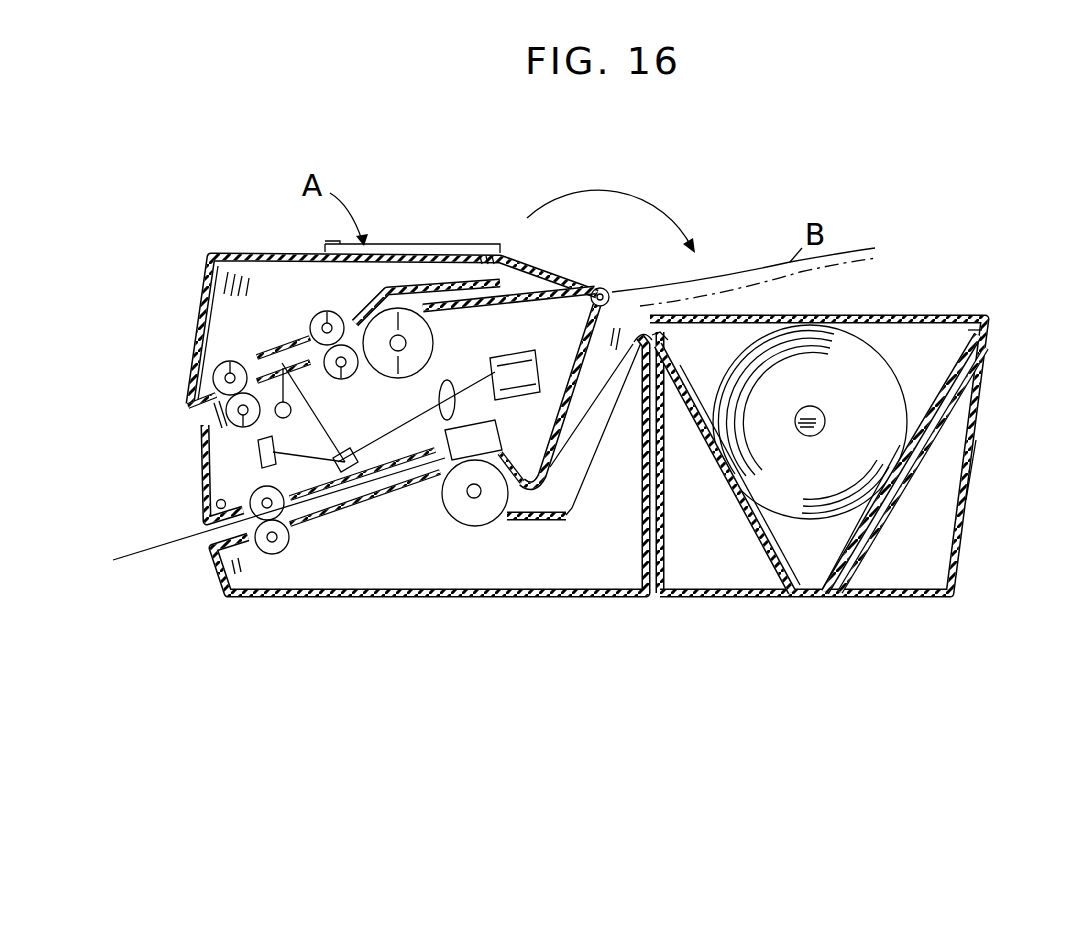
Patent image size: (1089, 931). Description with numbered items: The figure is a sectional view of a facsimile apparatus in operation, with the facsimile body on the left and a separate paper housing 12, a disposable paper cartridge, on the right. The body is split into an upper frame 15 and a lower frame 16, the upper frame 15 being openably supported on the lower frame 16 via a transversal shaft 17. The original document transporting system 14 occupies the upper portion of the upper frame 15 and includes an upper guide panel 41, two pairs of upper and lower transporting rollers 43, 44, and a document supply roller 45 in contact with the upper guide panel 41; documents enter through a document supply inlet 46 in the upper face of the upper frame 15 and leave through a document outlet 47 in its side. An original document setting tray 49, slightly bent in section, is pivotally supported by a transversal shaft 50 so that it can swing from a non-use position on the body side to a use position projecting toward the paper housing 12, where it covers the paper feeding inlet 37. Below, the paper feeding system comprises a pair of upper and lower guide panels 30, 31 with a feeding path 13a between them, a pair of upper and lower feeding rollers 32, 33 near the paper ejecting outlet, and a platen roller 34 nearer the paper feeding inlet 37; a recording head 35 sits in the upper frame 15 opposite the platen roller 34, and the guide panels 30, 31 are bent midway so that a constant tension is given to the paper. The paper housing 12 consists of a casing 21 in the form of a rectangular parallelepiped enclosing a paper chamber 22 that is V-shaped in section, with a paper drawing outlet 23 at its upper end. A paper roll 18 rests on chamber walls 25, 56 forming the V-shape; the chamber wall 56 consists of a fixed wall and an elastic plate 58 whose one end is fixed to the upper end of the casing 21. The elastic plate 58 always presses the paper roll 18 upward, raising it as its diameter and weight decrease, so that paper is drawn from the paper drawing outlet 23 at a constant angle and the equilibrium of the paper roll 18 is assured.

The paper housing 12 is at (958, 273).
The feeding path 13a is at (340, 512).
The original document transporting system 14 is at (264, 290).
The upper frame 15 is at (205, 283).
The lower frame 16 is at (348, 600).
The transversal shaft 17 is at (213, 508).
The paper roll 18 is at (865, 370).
The casing 21 is at (972, 497).
The paper chamber 22 is at (950, 338).
The paper drawing outlet 23 is at (693, 322).
The chamber wall 25 is at (758, 560).
The upper guide panel 30 is at (430, 500).
The lower guide panel 31 is at (412, 492).
The upper feeding roller 32 is at (258, 490).
The lower feeding roller 33 is at (272, 555).
The platen roller 34 is at (478, 522).
The recording head 35 is at (487, 430).
The paper feeding inlet 37 is at (620, 335).
The upper guide panel 41 is at (262, 364).
The upper transporting roller 43 is at (222, 366).
The lower transporting roller 44 is at (330, 322).
The document supply roller 45 is at (432, 340).
The document supply inlet 46 is at (515, 265).
The document outlet 47 is at (200, 410).
The original document setting tray 49 is at (408, 242).
The transversal shaft 50 is at (598, 287).
The chamber wall 56 is at (820, 600).
The elastic plate 58 is at (858, 580).